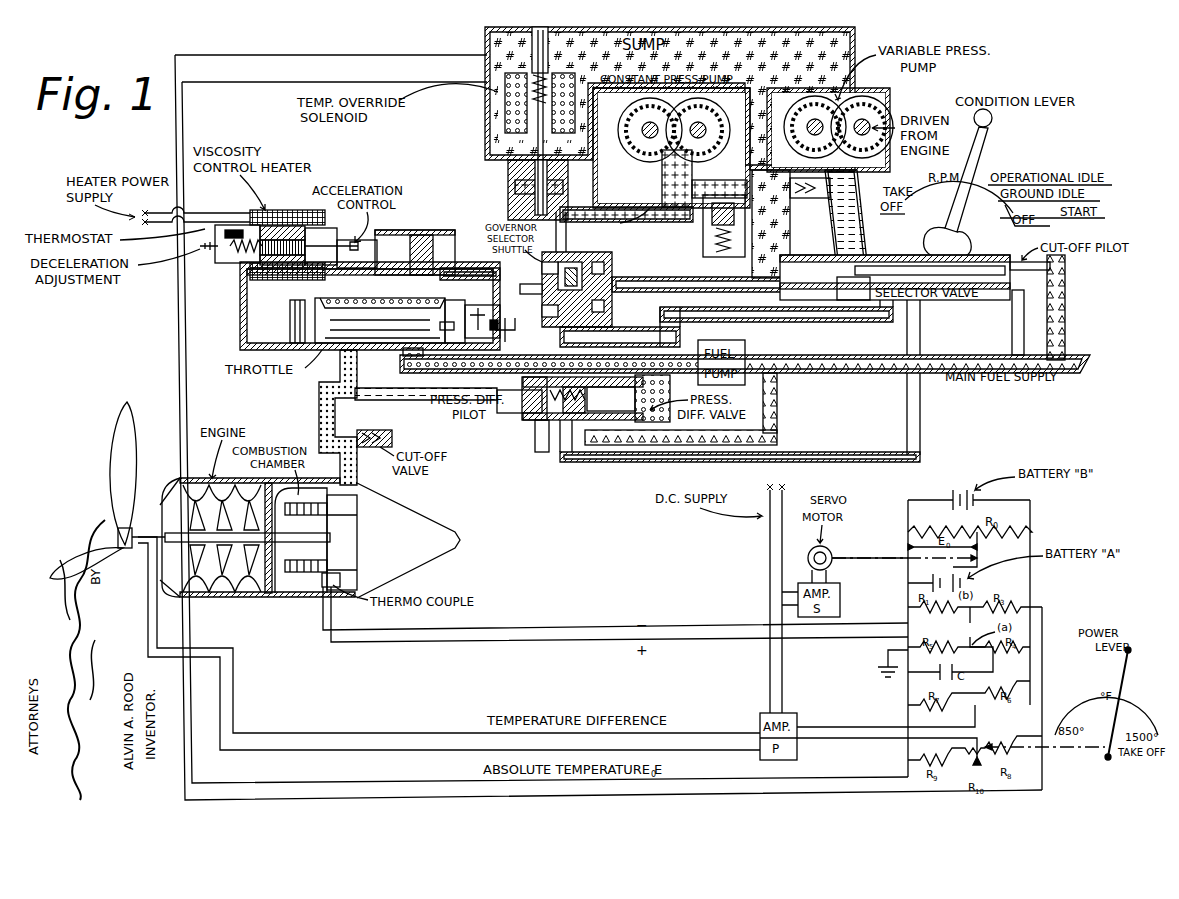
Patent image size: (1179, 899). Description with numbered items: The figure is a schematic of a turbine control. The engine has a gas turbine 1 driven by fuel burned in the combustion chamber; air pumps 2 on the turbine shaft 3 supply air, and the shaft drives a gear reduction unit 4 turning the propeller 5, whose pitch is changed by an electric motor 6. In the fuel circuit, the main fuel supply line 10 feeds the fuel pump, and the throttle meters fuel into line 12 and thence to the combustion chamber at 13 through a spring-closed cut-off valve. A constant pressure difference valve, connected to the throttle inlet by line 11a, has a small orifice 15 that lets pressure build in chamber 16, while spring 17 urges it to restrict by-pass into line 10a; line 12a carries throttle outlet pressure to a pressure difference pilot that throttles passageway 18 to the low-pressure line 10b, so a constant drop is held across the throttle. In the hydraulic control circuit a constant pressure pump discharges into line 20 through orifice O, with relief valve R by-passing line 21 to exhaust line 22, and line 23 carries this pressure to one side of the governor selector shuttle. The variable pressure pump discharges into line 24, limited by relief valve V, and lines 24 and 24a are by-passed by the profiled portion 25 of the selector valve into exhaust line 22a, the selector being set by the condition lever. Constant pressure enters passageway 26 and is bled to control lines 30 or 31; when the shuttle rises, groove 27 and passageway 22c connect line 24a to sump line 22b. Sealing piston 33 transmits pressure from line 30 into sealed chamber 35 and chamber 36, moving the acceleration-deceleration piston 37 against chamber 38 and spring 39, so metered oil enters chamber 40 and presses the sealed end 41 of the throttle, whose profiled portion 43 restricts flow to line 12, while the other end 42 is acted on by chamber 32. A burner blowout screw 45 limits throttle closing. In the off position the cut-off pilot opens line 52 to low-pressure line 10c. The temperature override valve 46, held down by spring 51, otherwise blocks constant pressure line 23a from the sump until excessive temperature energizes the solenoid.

The gas turbine 1 is at (322, 511).
The air pumps 2 is at (240, 522).
The turbine shaft 3 is at (243, 545).
The gear reduction unit 4 is at (156, 492).
The propeller 5 is at (137, 423).
The electric motor 6 is at (118, 539).
The main fuel supply line 10 is at (935, 377).
The low-pressure by-pass line 10a is at (715, 440).
The low-pressure line 10b is at (540, 447).
The low-pressure line 10c is at (1071, 295).
The line 11a is at (630, 375).
The throttle outlet line 12 is at (352, 336).
The pilot line 12a is at (410, 380).
The combustion chamber inlet 13 is at (352, 480).
The small orifice 15 is at (633, 397).
The chamber 16 is at (570, 400).
The spring 17 is at (582, 412).
The passageway 18 is at (530, 422).
The constant pressure line 20 is at (665, 160).
The by-pass line 21 is at (716, 182).
The exhaust line 22 is at (808, 150).
The exhaust line 22a is at (792, 276).
The sump exhaust line 22b is at (646, 282).
The passageway 22c is at (598, 263).
The constant pressure line 23 is at (560, 231).
The constant pressure line 23a is at (572, 191).
The variable pressure line 24 is at (860, 176).
The variable pressure line 24a is at (628, 340).
The profiled portion of selector valve 25 is at (832, 276).
The passageway 26 is at (532, 288).
The groove 27 is at (540, 265).
The control line 30 is at (462, 270).
The control line 31 is at (485, 312).
The chamber 32 is at (455, 318).
The sliding sealing piston 33 is at (422, 235).
The sealed chamber 35 is at (395, 235).
The chamber 36 is at (318, 236).
The acceleration-deceleration piston 37 is at (293, 224).
The chamber 38 is at (222, 260).
The spring 39 is at (238, 258).
The chamber 40 is at (257, 340).
The sealed end of throttle 41 is at (292, 312).
The other end of throttle 42 is at (455, 326).
The profiled portion of throttle 43 is at (372, 312).
The burner blowout adjustment screw 45 is at (500, 330).
The temperature override valve 46 is at (537, 185).
The spring 51 is at (548, 75).
The line 52 is at (971, 329).
The orifice O is at (622, 222).
The regulating relief valve R is at (700, 226).
The variable circuit relief valve V is at (805, 200).